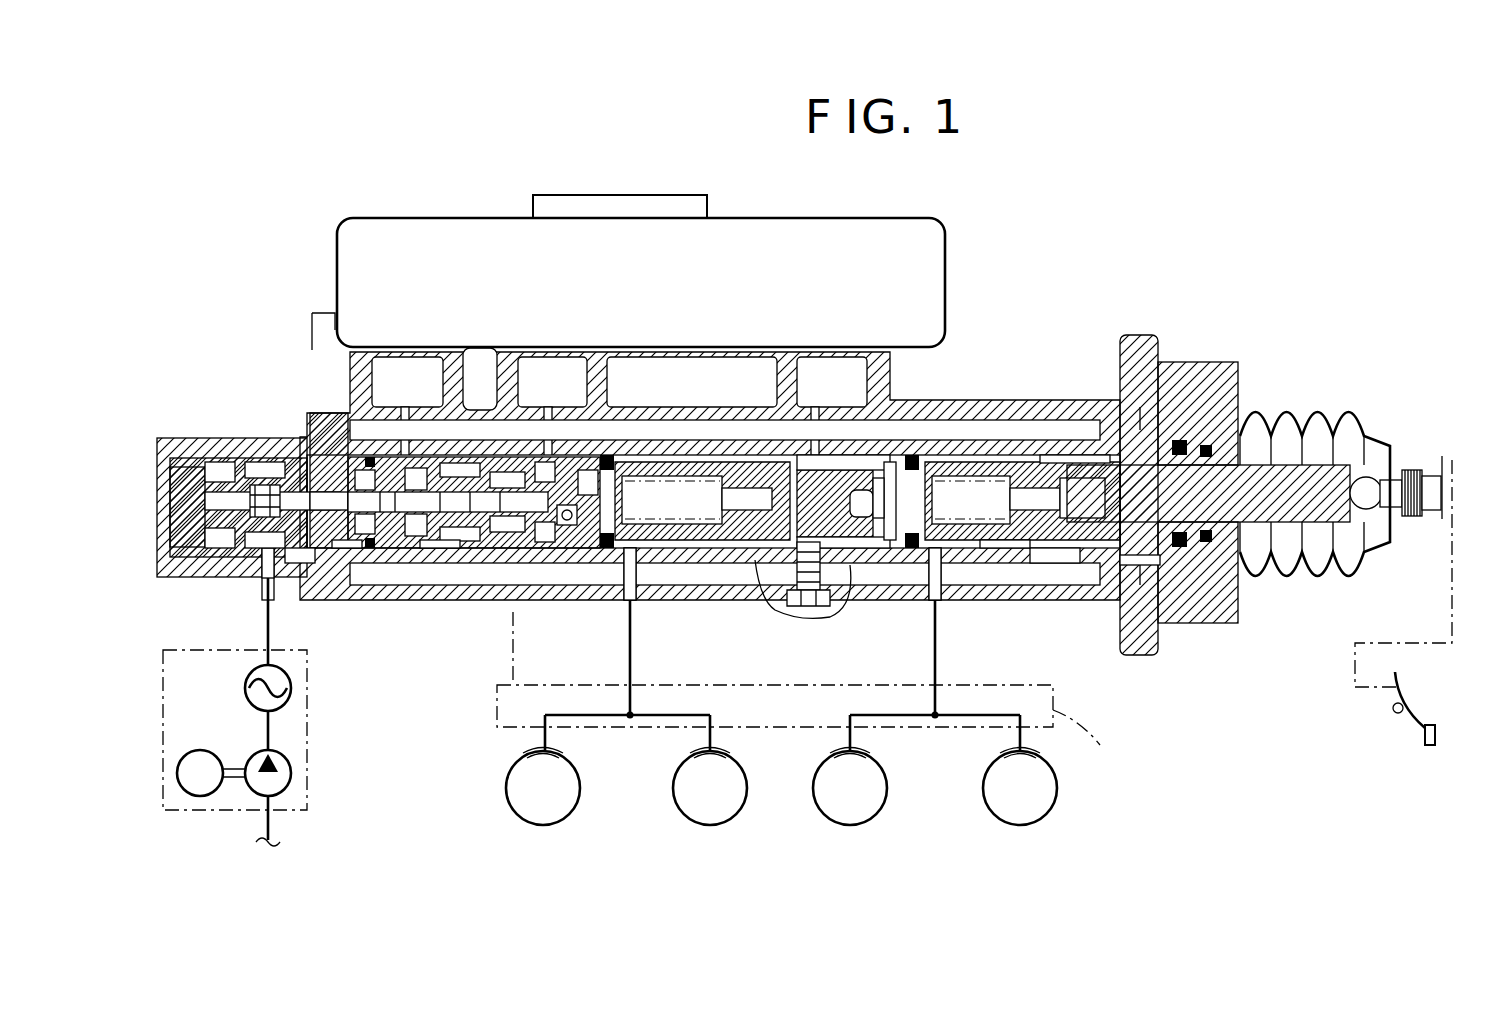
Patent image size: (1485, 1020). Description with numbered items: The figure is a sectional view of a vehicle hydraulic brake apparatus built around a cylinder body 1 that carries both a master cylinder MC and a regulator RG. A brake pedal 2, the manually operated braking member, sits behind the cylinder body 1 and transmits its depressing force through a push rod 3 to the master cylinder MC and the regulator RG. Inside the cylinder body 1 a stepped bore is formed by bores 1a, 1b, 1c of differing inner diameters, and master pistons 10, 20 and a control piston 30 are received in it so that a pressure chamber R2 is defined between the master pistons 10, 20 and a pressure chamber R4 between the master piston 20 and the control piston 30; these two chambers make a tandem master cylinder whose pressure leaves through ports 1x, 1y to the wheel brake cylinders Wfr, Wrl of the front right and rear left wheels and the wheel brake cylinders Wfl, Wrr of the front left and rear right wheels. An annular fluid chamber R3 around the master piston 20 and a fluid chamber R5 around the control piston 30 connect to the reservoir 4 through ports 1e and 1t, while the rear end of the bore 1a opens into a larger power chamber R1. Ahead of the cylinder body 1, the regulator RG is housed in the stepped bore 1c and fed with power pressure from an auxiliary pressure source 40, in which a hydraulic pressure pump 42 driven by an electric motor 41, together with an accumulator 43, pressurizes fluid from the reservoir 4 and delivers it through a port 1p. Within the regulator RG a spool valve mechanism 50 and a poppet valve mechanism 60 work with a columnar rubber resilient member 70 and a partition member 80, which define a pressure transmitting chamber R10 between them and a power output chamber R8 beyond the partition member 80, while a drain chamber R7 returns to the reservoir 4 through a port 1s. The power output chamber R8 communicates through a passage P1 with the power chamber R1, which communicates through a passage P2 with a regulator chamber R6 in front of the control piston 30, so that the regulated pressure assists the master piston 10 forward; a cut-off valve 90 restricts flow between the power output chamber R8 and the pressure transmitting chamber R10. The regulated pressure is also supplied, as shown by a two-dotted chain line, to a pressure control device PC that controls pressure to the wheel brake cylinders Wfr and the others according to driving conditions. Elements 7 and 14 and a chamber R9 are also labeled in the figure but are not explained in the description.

The master cylinder MC is at (691, 444).
The cylinder body 1 is at (1128, 348).
The bore 1a is at (1004, 548).
The bore 1b is at (470, 560).
The stepped bore 1c is at (207, 565).
The port 1e is at (817, 430).
The port 1p is at (262, 580).
The port 1s is at (407, 430).
The port 1t is at (546, 430).
The port 1x is at (938, 575).
The port 1y is at (640, 600).
The brake pedal 2 is at (1413, 720).
The push rod 3 is at (1407, 462).
The reservoir 4 is at (797, 240).
The stopper bolt 7 is at (790, 583).
The master piston 10 is at (1122, 612).
The boot 14 is at (1280, 570).
The master piston 20 is at (855, 545).
The control piston 30 is at (481, 567).
The auxiliary pressure source 40 is at (274, 712).
The electric motor 41 is at (200, 750).
The hydraulic pressure pump 42 is at (280, 776).
The accumulator 43 is at (247, 684).
The spool valve mechanism 50 is at (436, 575).
The poppet valve mechanism 60 is at (250, 545).
The resilient member 70 is at (370, 560).
The partition member 80 is at (330, 570).
The cut-off valve 90 is at (328, 416).
The power chamber R1 is at (1174, 620).
The pressure chamber R2 is at (985, 487).
The annular fluid chamber R3 is at (866, 462).
The pressure chamber R4 is at (676, 482).
The fluid chamber R5 is at (575, 465).
The regulator chamber R6 is at (452, 560).
The drain chamber R7 is at (402, 560).
The power output chamber R8 is at (303, 458).
The chamber R9 is at (235, 465).
The pressure transmitting chamber R10 is at (336, 572).
The passage P1 is at (290, 556).
The passage P2 is at (1068, 427).
The regulator RG is at (248, 492).
The pressure control device PC is at (818, 691).
The wheel brake cylinder Wfr is at (522, 750).
The wheel brake cylinder Wrl is at (690, 752).
The wheel brake cylinder Wfl is at (830, 750).
The wheel brake cylinder Wrr is at (1002, 748).